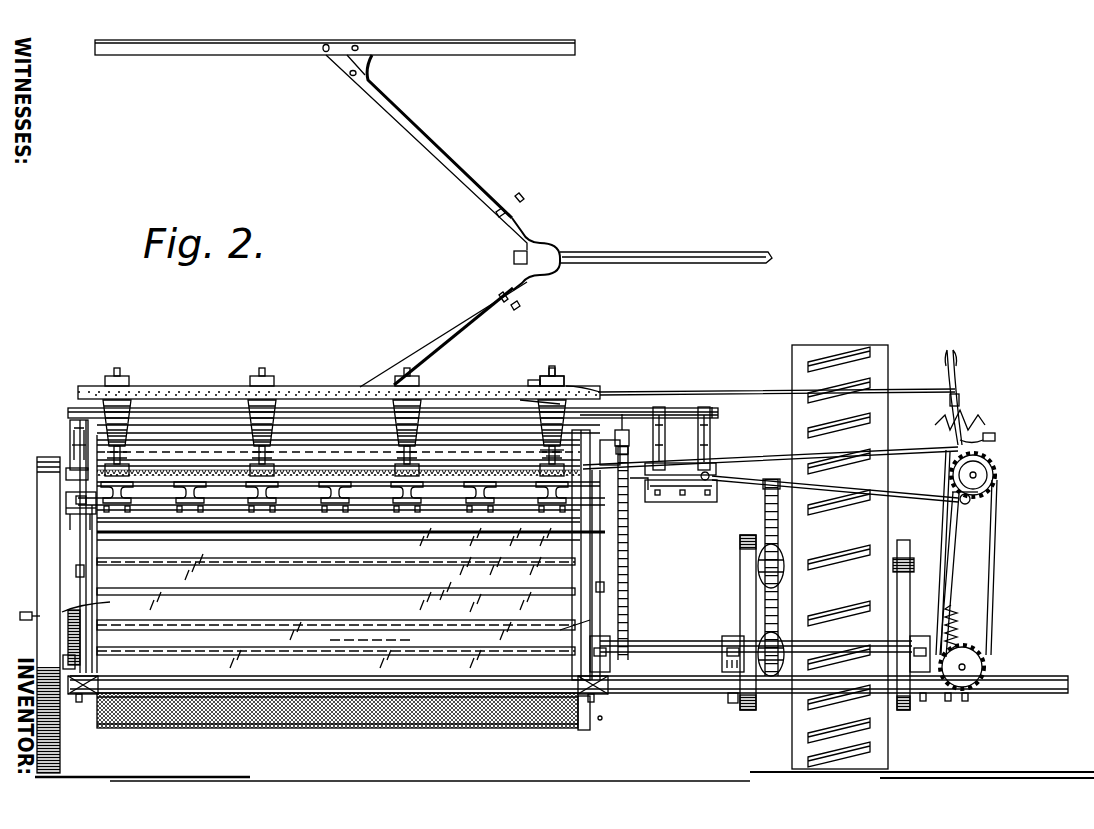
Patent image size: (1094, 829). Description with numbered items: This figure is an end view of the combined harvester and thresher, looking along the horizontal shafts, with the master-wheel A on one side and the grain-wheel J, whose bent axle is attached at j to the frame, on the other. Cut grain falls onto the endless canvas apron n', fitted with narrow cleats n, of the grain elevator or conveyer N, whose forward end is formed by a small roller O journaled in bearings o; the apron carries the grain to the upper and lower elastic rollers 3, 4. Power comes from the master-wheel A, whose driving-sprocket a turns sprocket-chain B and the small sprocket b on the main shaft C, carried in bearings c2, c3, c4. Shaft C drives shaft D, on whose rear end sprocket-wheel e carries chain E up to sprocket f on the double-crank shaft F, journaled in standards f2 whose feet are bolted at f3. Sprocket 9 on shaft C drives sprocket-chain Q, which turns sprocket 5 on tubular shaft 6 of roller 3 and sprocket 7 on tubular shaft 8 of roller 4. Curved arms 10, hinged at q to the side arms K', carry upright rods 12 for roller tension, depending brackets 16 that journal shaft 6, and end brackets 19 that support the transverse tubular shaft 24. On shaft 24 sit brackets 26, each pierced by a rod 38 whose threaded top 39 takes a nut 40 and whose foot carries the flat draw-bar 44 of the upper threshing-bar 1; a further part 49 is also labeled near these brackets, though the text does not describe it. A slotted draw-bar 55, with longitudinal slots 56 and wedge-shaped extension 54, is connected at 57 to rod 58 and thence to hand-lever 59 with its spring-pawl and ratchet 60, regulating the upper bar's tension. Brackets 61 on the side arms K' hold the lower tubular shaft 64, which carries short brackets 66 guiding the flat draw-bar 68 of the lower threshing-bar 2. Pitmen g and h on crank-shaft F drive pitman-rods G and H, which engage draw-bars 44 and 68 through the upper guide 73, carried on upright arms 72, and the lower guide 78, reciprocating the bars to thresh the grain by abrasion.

The draw-bar 55 is at (182, 384).
The longitudinal slots 56 is at (538, 388).
The top end of rod 39 is at (560, 369).
The nut 40 is at (564, 381).
The connection point 57 is at (600, 392).
The rod 58 is at (777, 384).
The hand-lever 59 is at (963, 397).
The spring-pawl and ratchet 60 is at (948, 408).
The transverse tubular shaft 24 is at (718, 410).
The upright arms 72 is at (665, 430).
The upper threshing-bar guide 73 is at (680, 461).
The sprocket 5 is at (622, 430).
The flat draw-bar 44 is at (636, 470).
The tubular shaft 6 is at (70, 452).
The brackets 26 is at (127, 421).
The upper elastic roller 3 is at (322, 444).
The upper threshing-bar 1 is at (355, 470).
The wedge-shaped extension 54 is at (526, 404).
The plate 49 is at (544, 450).
The rod or plunger 38 is at (548, 457).
The upright rod or standard 12 is at (545, 470).
The bracket 19 is at (74, 428).
The curved arms 10 is at (72, 440).
The bracket 16 is at (68, 472).
The lower transverse tubular shaft 64 is at (66, 500).
The brackets 61 is at (66, 510).
The tubular shaft 8 is at (72, 522).
The short brackets 66 is at (260, 492).
The lower elastic roller 4 is at (350, 522).
The lower threshing-bar 2 is at (375, 455).
The flat draw-bar 68 is at (640, 492).
The lower threshing-bar guide 78 is at (676, 503).
The sprocket 7 is at (632, 526).
The sprocket-chain Q is at (628, 576).
The pitman-rod G is at (803, 458).
The pitman-rod H is at (876, 494).
The double-crank shaft F is at (968, 476).
The sprocket f is at (992, 476).
The pitman g is at (994, 440).
The pitman h is at (968, 505).
The driving-sprocket a is at (764, 504).
The master-wheel A is at (840, 546).
The sprocket-chain B is at (764, 588).
The main shaft C is at (756, 638).
The bearing c3 is at (732, 640).
The bearing c4 is at (600, 638).
The sprocket 9 is at (626, 662).
The chain E is at (990, 600).
The upright rods or standards f2 is at (950, 555).
The sprocket-wheel e is at (985, 662).
The bearing c2 is at (924, 640).
The foot bolting point f3 is at (905, 650).
The shaft D is at (962, 690).
The small sprocket b is at (774, 690).
The grain-wheel J is at (48, 615).
The pivot q is at (340, 580).
The side arms K' is at (326, 618).
The transverse slats or cleats n is at (336, 598).
The endless canvas apron n' is at (327, 621).
The grain elevator or conveyer N is at (337, 724).
The small roller O is at (582, 732).
The bearings o is at (94, 718).
The axle attachment point j is at (68, 665).